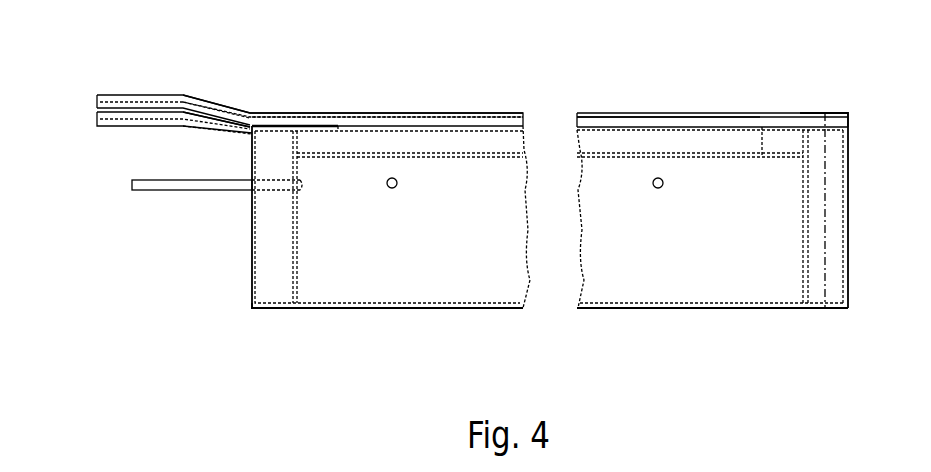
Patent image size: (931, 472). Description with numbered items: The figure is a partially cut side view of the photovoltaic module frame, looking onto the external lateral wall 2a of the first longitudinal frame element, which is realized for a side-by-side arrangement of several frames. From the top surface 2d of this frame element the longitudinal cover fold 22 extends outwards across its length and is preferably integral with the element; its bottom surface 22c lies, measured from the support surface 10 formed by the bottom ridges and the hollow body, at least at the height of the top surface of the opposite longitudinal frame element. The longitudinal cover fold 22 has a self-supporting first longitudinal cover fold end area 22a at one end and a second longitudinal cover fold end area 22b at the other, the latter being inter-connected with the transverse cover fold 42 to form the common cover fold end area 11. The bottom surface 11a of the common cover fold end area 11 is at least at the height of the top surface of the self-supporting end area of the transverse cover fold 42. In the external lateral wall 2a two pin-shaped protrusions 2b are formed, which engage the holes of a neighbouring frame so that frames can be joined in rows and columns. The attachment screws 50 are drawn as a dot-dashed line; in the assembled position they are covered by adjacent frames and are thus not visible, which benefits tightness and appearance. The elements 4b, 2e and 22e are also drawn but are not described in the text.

The common cover fold end area 11 is at (112, 92).
The second longitudinal cover fold end area 22b is at (170, 90).
The bottom surface of the common cover fold end area 11a is at (113, 113).
The transverse cover fold 42 is at (167, 120).
The rod 4b is at (178, 185).
The longitudinal cover fold 22 is at (490, 122).
The external lateral wall of the first longitudinal frame element 2a is at (397, 268).
The housing side wall 2e is at (318, 312).
The support surface 10 is at (430, 313).
The protrusions 2b is at (397, 187).
The cover plate section 22e is at (720, 110).
The top surface of the first longitudinal frame element 2d is at (648, 125).
The first longitudinal cover fold end area 22a is at (813, 110).
The bottom surface of the longitudinal cover fold 22c is at (773, 130).
The attachment screws 50 is at (825, 277).